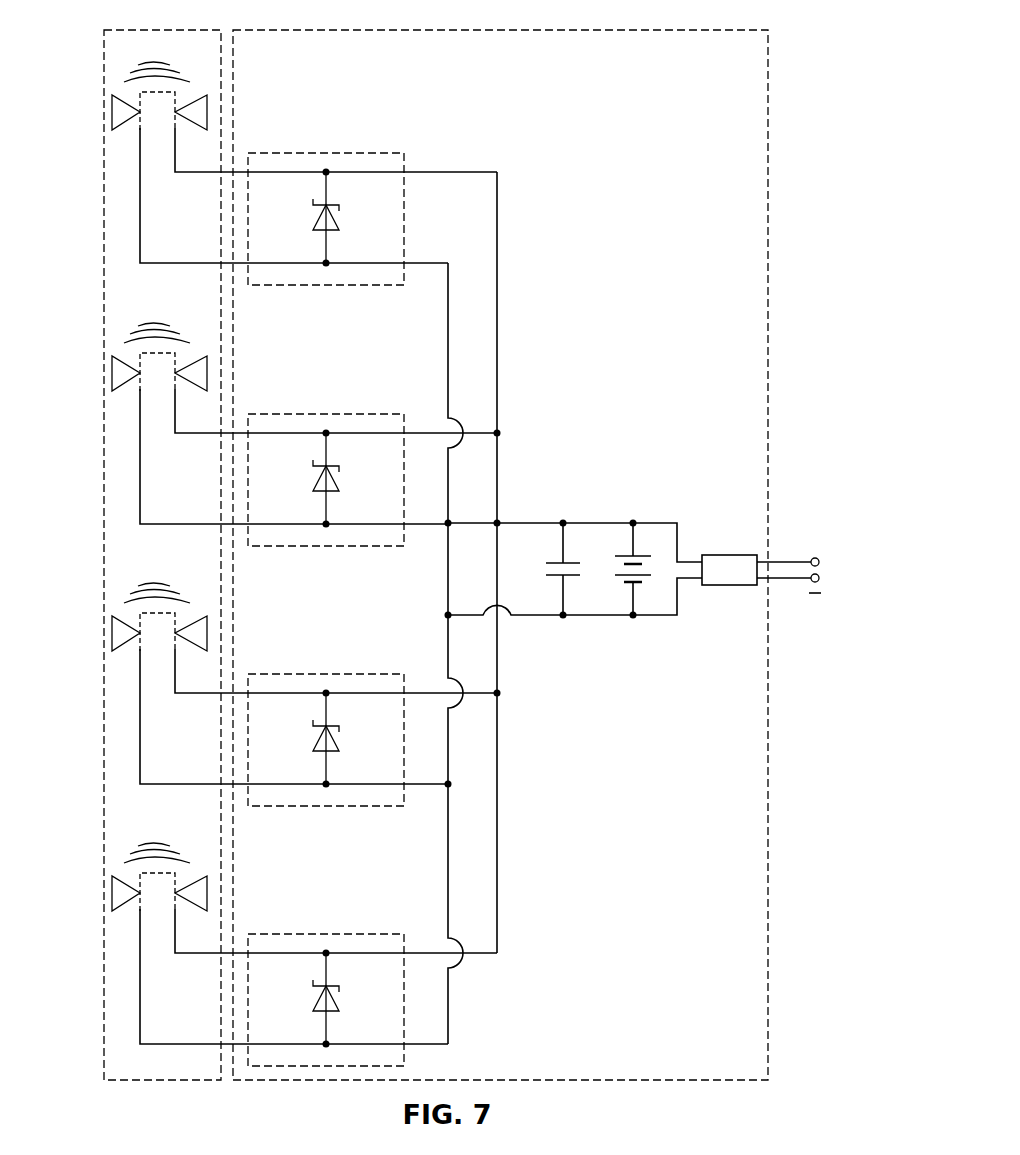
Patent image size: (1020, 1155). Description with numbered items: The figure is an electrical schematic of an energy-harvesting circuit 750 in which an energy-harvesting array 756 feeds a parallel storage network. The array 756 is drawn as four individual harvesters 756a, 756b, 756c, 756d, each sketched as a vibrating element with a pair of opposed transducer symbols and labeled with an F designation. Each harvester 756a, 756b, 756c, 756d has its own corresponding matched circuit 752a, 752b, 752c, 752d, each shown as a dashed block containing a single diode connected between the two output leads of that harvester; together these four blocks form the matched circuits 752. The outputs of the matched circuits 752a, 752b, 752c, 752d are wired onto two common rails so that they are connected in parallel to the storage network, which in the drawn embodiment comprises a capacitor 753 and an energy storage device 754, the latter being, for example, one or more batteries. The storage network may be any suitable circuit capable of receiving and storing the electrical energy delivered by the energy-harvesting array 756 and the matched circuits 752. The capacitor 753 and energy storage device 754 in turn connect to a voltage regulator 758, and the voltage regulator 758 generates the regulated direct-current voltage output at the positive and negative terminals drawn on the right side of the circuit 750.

The energy-harvesting circuit 750 is at (534, 555).
The matched circuits 752 is at (360, 584).
The matched circuit 752a is at (340, 153).
The matched circuit 752b is at (326, 451).
The matched circuit 752c is at (326, 711).
The matched circuit 752d is at (326, 971).
The capacitor 753 is at (573, 580).
The energy storage device 754 is at (647, 578).
The energy-harvesting array 756 is at (103, 536).
The energy harvester 756a is at (269, 149).
The energy harvester 756b is at (269, 410).
The energy harvester 756c is at (269, 670).
The energy harvester 756d is at (269, 930).
The voltage regulator 758 is at (733, 555).